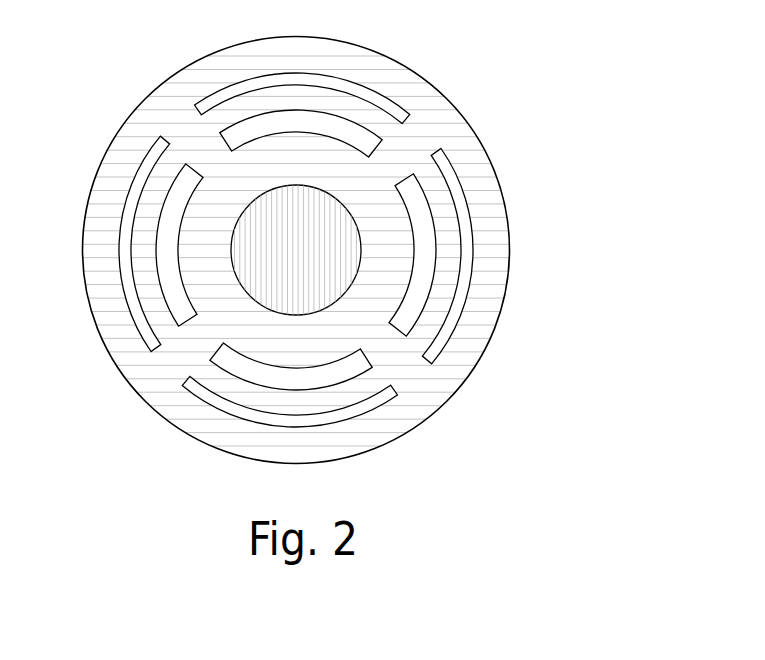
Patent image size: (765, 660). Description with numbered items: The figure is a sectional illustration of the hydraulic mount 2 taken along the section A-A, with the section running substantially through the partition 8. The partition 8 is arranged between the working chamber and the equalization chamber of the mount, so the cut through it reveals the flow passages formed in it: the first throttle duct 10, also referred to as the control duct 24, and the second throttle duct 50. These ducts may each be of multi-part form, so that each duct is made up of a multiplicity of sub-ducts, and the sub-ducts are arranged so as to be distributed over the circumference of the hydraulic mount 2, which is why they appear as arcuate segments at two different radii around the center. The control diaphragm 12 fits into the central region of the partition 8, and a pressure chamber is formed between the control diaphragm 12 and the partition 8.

The hydraulic mount 2 is at (547, 91).
The partition 8 is at (497, 255).
The first throttle duct 10 is at (368, 250).
The control duct 24 is at (422, 245).
The control diaphragm 12 is at (298, 290).
The second throttle duct 50 is at (442, 337).